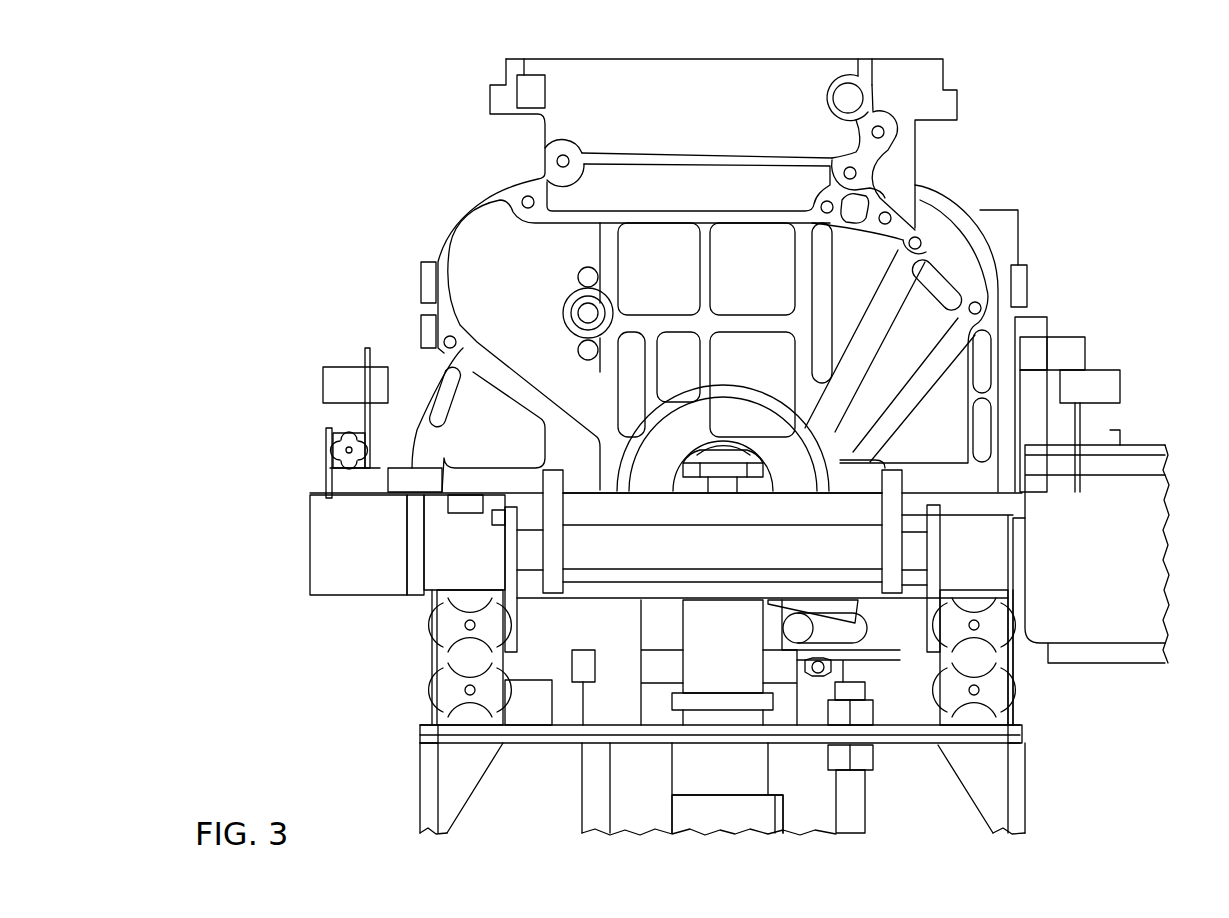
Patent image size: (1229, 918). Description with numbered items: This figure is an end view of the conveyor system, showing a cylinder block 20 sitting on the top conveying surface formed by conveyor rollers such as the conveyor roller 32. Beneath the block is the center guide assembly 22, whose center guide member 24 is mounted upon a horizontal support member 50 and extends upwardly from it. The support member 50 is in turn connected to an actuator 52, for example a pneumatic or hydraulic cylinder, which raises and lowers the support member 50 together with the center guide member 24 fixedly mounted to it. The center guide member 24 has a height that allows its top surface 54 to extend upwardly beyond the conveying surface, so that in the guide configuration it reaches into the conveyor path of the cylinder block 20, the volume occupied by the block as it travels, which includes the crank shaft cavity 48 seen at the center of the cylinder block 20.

The cylinder block 20 is at (907, 170).
The center guide assembly 22 is at (753, 490).
The center guide member 24 is at (718, 478).
The conveyor roller 32 is at (598, 497).
The crank shaft cavity 48 is at (716, 440).
The horizontal support member 50 is at (693, 620).
The actuator 52 is at (773, 816).
The top surface 54 is at (736, 455).